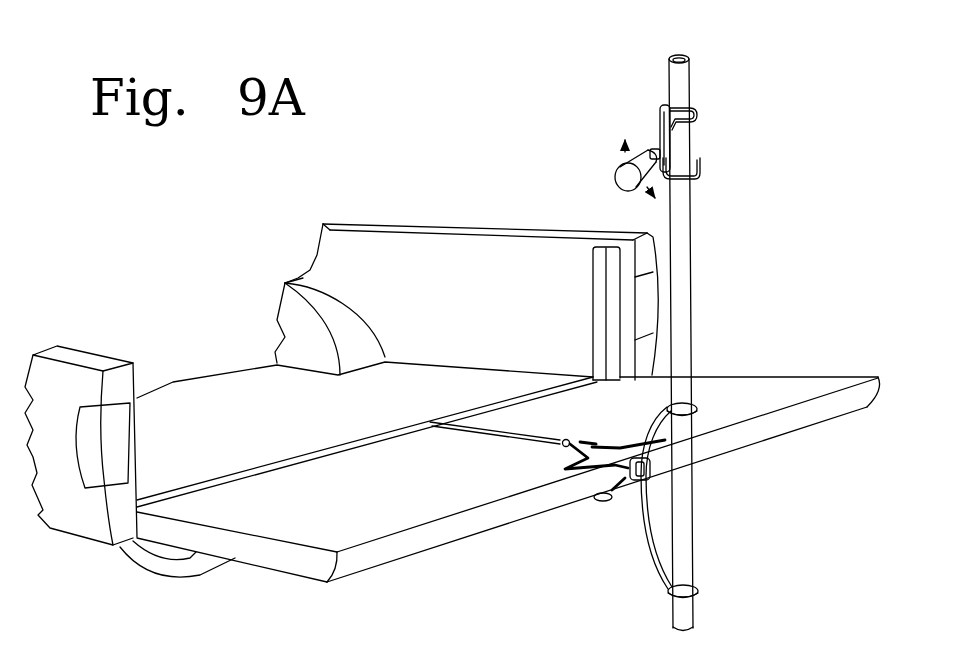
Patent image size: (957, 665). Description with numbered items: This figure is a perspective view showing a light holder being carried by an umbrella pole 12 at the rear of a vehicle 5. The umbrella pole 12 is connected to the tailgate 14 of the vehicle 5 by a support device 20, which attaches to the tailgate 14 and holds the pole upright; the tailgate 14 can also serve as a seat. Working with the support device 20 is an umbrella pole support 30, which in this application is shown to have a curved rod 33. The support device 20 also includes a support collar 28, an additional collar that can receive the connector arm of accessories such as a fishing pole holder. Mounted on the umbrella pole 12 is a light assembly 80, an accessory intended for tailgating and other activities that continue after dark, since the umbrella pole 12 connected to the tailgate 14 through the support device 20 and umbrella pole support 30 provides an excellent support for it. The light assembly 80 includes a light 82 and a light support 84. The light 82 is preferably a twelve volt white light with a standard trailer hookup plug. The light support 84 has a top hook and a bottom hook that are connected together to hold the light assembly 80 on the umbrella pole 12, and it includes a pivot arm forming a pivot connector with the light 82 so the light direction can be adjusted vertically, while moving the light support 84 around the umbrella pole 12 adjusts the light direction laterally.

The vehicle 5 is at (480, 214).
The umbrella pole 12 is at (683, 280).
The tailgate 14 is at (397, 513).
The support device 20 is at (561, 458).
The support collar 28 is at (582, 479).
The umbrella pole support 30 is at (703, 579).
The curved rod 33 is at (643, 520).
The light assembly 80 is at (644, 121).
The light 82 is at (617, 177).
The light support 84 is at (703, 110).